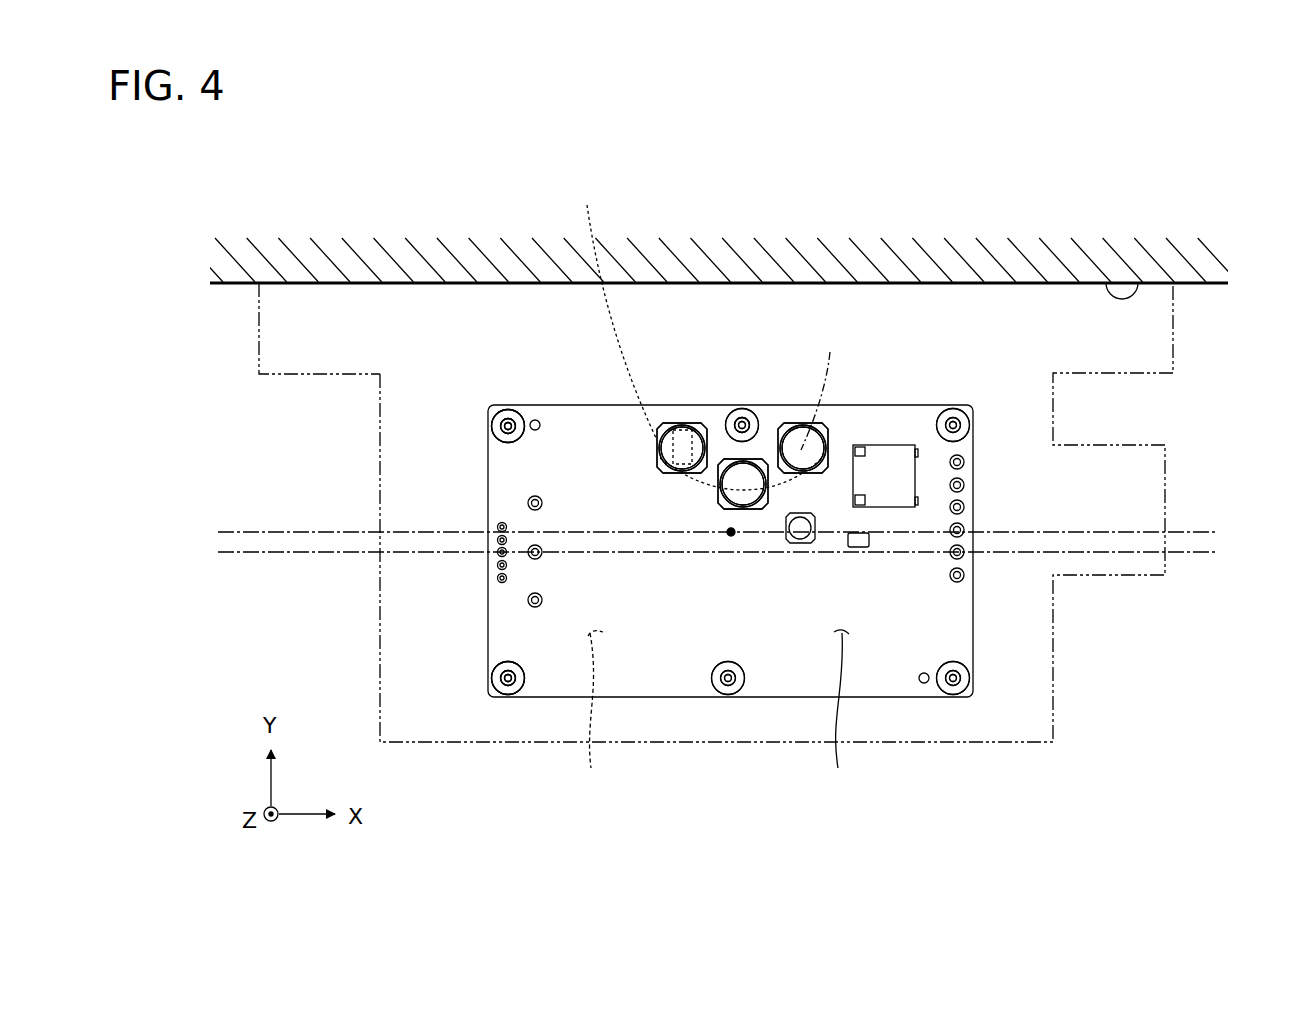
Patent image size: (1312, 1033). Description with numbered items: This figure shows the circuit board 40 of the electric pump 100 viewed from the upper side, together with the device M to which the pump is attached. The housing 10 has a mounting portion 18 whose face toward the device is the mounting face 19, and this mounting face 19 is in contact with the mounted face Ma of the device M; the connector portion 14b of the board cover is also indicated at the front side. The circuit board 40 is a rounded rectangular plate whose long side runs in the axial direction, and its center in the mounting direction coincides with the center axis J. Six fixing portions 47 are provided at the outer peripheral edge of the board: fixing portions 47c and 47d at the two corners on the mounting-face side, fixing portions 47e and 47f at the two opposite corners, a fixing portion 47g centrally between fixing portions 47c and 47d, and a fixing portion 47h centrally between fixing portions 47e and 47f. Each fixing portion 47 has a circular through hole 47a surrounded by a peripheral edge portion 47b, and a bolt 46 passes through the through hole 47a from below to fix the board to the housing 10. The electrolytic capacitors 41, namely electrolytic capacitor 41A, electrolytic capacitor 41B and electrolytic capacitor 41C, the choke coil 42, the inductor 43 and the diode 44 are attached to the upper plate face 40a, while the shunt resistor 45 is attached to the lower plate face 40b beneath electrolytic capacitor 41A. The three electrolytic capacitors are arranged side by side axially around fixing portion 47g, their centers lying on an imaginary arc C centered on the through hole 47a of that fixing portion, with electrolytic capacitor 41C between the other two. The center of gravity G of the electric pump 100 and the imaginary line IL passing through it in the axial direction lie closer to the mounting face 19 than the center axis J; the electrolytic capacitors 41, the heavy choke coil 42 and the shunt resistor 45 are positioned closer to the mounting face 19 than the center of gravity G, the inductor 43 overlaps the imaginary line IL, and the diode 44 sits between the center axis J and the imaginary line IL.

The electric pump 100 is at (1205, 338).
The housing 10 is at (1058, 645).
The connector portion 14b is at (1166, 492).
The mounting portion 18 is at (259, 320).
The mounting face 19 is at (815, 282).
The device M is at (987, 232).
The mounted face Ma is at (1140, 283).
The circuit board 40 is at (778, 709).
The upper plate face 40a is at (842, 715).
The lower plate face 40b is at (593, 714).
The electrolytic capacitor 41 is at (650, 451).
The electrolytic capacitor 41A is at (688, 418).
The electrolytic capacitor 41B is at (809, 416).
The electrolytic capacitor 41C is at (735, 470).
The choke coil 42 is at (895, 475).
The inductor 43 is at (800, 541).
The diode 44 is at (858, 548).
The shunt resistor 45 is at (698, 333).
The bolt 46 is at (509, 420).
The fixing portion 47 is at (508, 404).
The through hole 47a is at (508, 432).
The peripheral edge portion 47b is at (492, 424).
The fixing portion 47c is at (944, 410).
The fixing portion 47d is at (498, 410).
The fixing portion 47e is at (972, 687).
The fixing portion 47f is at (525, 693).
The fixing portion 47g is at (751, 410).
The fixing portion 47h is at (740, 694).
The center of gravity G is at (731, 537).
The imaginary arc C is at (818, 389).
The imaginary line IL is at (260, 532).
The center axis J is at (260, 552).